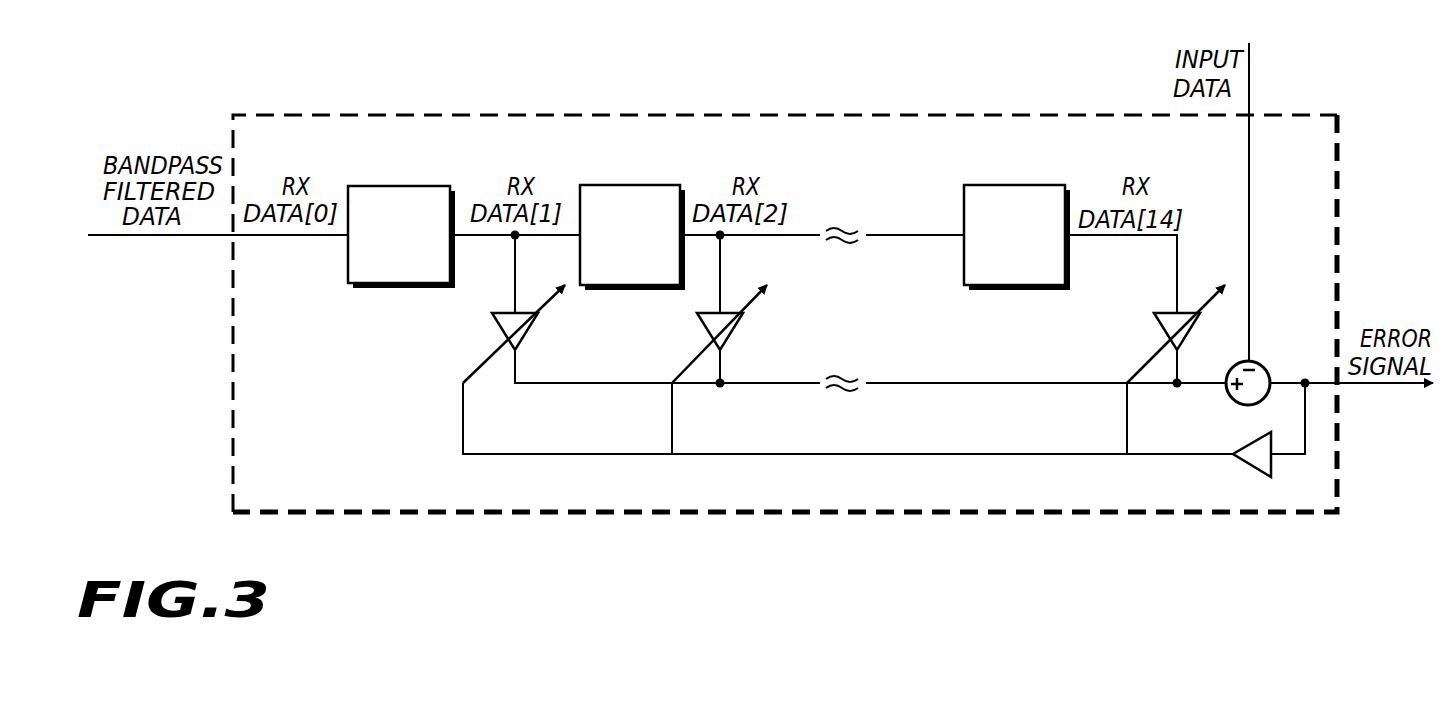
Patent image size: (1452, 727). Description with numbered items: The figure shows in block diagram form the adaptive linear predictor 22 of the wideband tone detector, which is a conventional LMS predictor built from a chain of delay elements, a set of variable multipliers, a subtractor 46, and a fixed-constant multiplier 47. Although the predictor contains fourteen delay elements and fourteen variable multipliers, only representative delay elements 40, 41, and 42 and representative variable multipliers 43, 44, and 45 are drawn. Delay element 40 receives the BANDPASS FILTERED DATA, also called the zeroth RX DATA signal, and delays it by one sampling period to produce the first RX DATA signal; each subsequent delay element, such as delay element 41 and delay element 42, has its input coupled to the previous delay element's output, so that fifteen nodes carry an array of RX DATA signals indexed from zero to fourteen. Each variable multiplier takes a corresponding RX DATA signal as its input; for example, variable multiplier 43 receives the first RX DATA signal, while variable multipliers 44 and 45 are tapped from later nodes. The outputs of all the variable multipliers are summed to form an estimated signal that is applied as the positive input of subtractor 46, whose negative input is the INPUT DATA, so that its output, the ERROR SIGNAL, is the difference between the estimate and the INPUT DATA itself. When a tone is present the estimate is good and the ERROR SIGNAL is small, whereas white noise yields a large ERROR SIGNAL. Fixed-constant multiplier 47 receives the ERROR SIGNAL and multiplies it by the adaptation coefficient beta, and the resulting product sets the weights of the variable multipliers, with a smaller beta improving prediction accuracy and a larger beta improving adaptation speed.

The adaptive linear predictor 22 is at (233, 314).
The delay element 40 is at (408, 186).
The delay element 41 is at (638, 185).
The delay element 42 is at (1022, 185).
The variable multiplier 43 is at (537, 335).
The variable multiplier 44 is at (737, 335).
The variable multiplier 45 is at (1158, 333).
The subtractor 46 is at (1234, 403).
The fixed-constant multiplier 47 is at (1250, 470).